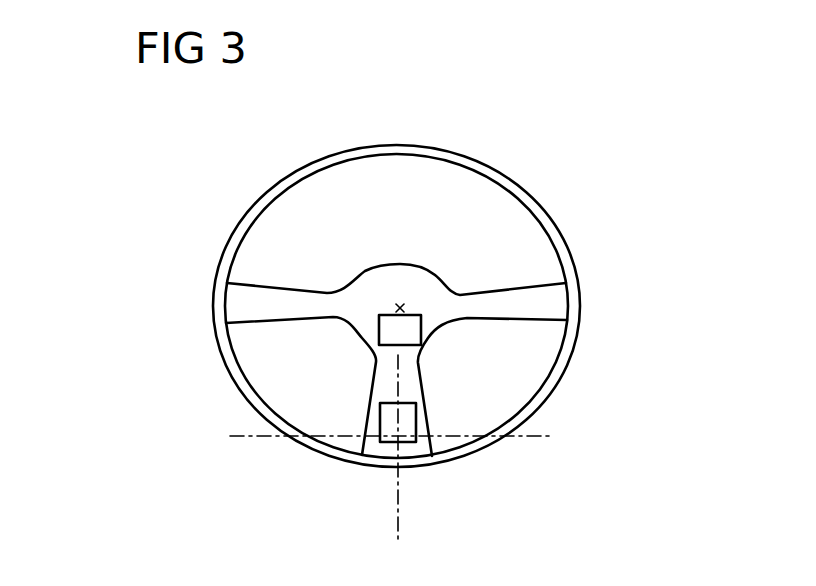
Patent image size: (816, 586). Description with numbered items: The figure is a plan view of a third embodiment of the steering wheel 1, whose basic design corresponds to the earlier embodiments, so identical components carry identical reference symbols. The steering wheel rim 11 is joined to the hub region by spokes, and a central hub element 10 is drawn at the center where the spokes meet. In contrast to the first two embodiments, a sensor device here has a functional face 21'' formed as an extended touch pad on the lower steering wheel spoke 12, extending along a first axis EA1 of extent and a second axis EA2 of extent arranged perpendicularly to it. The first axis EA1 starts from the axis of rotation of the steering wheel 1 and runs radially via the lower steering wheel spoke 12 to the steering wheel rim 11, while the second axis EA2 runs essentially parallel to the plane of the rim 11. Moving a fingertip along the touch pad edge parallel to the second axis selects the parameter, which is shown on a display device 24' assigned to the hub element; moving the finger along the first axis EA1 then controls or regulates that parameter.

The steering wheel 1 is at (178, 237).
The hub / central point 10 is at (397, 305).
The steering wheel rim 11 is at (390, 146).
The lower steering wheel spoke 12 is at (247, 305).
The functional face 21'' is at (450, 395).
The display device 24' is at (428, 283).
The first axis of extent EA1 is at (390, 490).
The second axis of extent EA2 is at (538, 438).